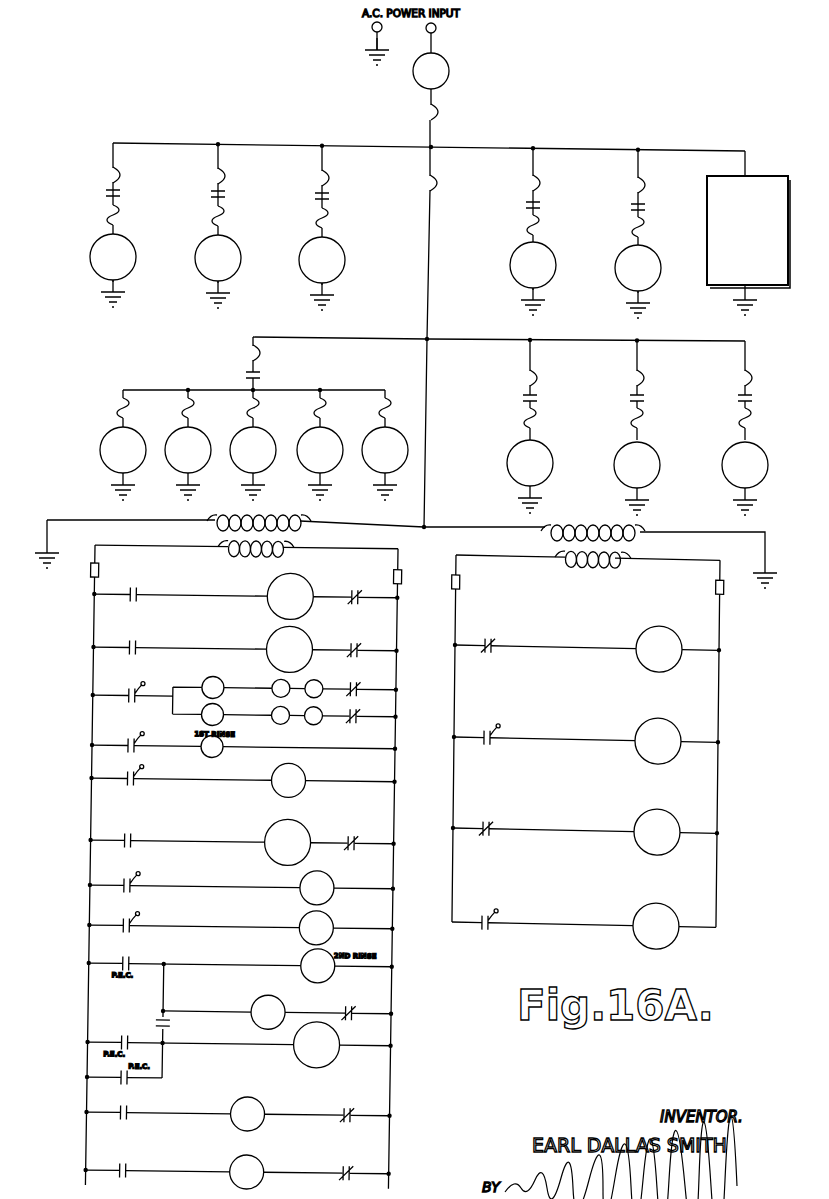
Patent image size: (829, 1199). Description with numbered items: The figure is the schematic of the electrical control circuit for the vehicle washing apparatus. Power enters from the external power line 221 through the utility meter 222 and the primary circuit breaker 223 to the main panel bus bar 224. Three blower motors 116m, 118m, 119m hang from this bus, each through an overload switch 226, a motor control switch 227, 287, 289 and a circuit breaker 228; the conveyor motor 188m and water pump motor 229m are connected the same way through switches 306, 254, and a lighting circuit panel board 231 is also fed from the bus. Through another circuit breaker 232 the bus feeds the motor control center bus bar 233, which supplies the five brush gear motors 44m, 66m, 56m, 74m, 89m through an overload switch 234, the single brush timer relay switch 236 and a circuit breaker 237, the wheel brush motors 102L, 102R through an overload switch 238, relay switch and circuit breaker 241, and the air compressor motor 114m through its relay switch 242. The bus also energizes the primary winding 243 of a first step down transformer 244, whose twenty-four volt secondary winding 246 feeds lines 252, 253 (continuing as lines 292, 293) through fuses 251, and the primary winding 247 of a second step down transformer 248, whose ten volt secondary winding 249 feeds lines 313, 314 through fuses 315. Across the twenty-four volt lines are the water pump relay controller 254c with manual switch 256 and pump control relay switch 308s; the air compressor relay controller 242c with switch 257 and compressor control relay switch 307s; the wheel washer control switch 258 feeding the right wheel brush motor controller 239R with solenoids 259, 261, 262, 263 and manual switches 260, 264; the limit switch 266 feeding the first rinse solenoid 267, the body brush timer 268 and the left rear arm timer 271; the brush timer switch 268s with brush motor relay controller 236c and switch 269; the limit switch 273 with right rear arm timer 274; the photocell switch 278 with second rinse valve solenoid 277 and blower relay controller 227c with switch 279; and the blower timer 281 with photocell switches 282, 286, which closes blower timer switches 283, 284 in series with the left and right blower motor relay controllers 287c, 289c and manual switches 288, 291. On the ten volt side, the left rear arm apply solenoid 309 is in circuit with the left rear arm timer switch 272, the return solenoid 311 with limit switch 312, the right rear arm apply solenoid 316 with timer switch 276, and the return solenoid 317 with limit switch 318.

The external power line 221 is at (440, 42).
The utility meter 222 is at (449, 76).
The primary circuit breaker 223 is at (423, 112).
The main panel bus bar 224 is at (476, 148).
The overload switch 226 is at (122, 211).
The motor control switch 227 is at (106, 195).
The circuit breaker 228 is at (128, 178).
The lighting circuit panel board 231 is at (760, 176).
The circuit breaker 232 is at (419, 189).
The motor control center bus bar 233 is at (359, 338).
The overload switch 234 is at (117, 398).
The brush timer relay switch 236 is at (268, 376).
The circuit breaker 237 is at (244, 354).
The overload switch 238 is at (532, 406).
The right wheel brush motor controller 239R is at (205, 717).
The circuit breaker 241 is at (525, 378).
The air compressor motor relay switch 242 is at (738, 398).
The primary winding 243 is at (232, 516).
The first step down transformer 244 is at (290, 539).
The secondary winding 246 is at (248, 559).
The primary winding 247 is at (586, 520).
The second step down transformer 248 is at (626, 550).
The secondary winding 249 is at (599, 558).
The fuses 251 is at (89, 575).
The line 252 is at (94, 617).
The line 253 is at (398, 627).
The switch 254 is at (630, 205).
The water pump relay controller 254c is at (268, 607).
The manually operated switch 256 is at (356, 595).
The manually operated switch 257 is at (358, 647).
The wheel washer control switch 258 is at (132, 702).
The left wheel rinse and soap control valve solenoid 259 is at (280, 678).
The manual switch 260 is at (358, 678).
The left wheel brush frame pneumatic actuator supply valve solenoid 261 is at (318, 676).
The rinse and soap valve solenoid 262 is at (280, 724).
The wheel brush support frame pneumatic actuator supply valve solenoid 263 is at (317, 722).
The manual switch 264 is at (358, 723).
The normally open limit switch 266 is at (138, 753).
The solenoid 267 is at (220, 756).
The body brush timer 268 is at (305, 766).
The brush timer switch 268s is at (140, 833).
The manually operated switch 269 is at (358, 832).
The left rear arm timer 271 is at (335, 874).
The left rear arm timer switch 272 is at (489, 636).
The limit switch 273 is at (140, 918).
The right rear arm timer 274 is at (336, 916).
The right rear arm timer switch 276 is at (492, 836).
The valve solenoid 277 is at (308, 954).
The normally open switch 278 is at (135, 955).
The manually operated switch 279 is at (358, 1002).
The timer 281 is at (306, 1058).
The normally-open photo-electrically controlled switch 282 is at (130, 1025).
The blower timer switch 283 is at (136, 1120).
The blower timer switch 284 is at (135, 1163).
The photo-electrically operated switch 286 is at (137, 1081).
The motor control switch 287 is at (230, 193).
The left blower motor relay controller 287c is at (269, 1106).
The manual switch 288 is at (353, 1101).
The motor control switch 289 is at (340, 194).
The right blower motor relay controller 289c is at (269, 1156).
The manual switch 291 is at (361, 1162).
The line 292 is at (95, 1170).
The line 293 is at (398, 1170).
The switch 306 is at (526, 204).
The compressor control relay switch 307s is at (137, 654).
The pump control relay switch 308s is at (136, 600).
The solenoid 309 is at (644, 628).
The solenoid 311 is at (656, 714).
The normally-open limit switch 312 is at (492, 745).
The line 313 is at (456, 612).
The line 314 is at (722, 617).
The fuses 315 is at (465, 583).
The arm apply solenoid 316 is at (661, 805).
The arm return solenoid 317 is at (646, 903).
The normally-open limit switch 318 is at (492, 930).
The blower motor 116m is at (135, 247).
The blower motor 118m is at (240, 248).
The blower motor 119m is at (345, 272).
The conveyor motor 188m is at (510, 278).
The water pump motor 229m is at (615, 276).
The brush drive motor 44m is at (100, 457).
The brush drive motor 66m is at (168, 442).
The brush drive motor 56m is at (231, 440).
The brush drive motor 74m is at (301, 442).
The brush drive motor 89m is at (368, 442).
The left wheel brush drive motor 102L is at (507, 460).
The right wheel brush drive motor 102R is at (614, 460).
The air compressor motor 114m is at (722, 464).
The brush motor relay controller 236c is at (270, 832).
The air compressor relay controller 242c is at (268, 658).
The relay controller 227c is at (263, 1000).